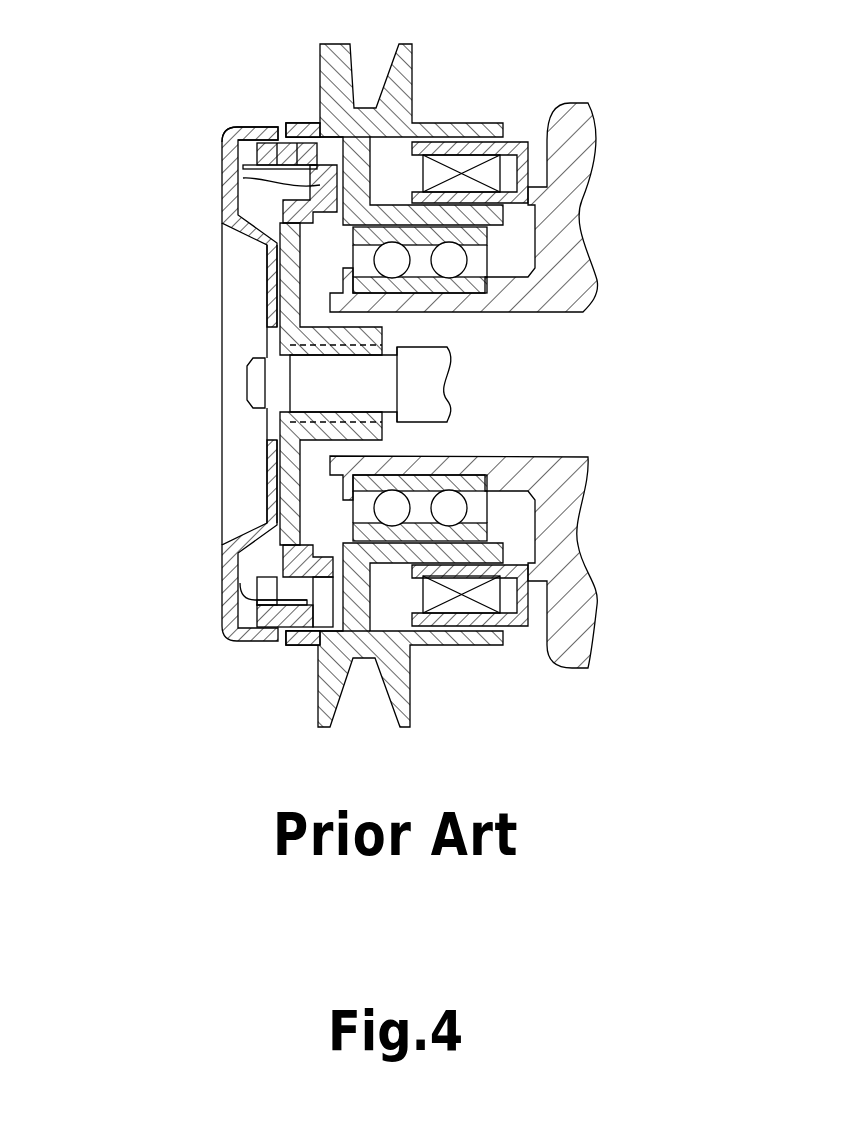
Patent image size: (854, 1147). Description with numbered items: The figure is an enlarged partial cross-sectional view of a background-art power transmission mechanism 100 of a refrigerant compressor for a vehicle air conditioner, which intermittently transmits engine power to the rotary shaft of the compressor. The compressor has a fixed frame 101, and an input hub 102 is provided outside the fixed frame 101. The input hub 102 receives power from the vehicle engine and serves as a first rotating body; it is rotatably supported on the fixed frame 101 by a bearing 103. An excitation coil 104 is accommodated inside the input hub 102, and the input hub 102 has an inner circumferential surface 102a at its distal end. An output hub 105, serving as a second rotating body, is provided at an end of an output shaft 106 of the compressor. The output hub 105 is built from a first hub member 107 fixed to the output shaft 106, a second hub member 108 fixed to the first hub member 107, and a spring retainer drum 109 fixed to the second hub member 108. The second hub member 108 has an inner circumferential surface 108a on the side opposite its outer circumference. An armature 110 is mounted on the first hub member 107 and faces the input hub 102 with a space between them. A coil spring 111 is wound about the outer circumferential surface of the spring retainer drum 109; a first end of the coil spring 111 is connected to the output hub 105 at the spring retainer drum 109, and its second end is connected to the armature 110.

The power transmission mechanism 100 is at (201, 616).
The fixed frame 101 is at (584, 115).
The input hub 102 is at (437, 122).
The inner circumferential surface 102a is at (288, 124).
The bearing 103 is at (393, 272).
The excitation coil 104 is at (480, 158).
The output hub 105 is at (246, 281).
The output shaft 106 is at (448, 407).
The first hub member 107 is at (283, 304).
The second hub member 108 is at (240, 243).
The inner circumferential surface 108a is at (232, 130).
The spring retainer drum 109 is at (236, 198).
The armature 110 is at (317, 186).
The coil spring 111 is at (260, 148).